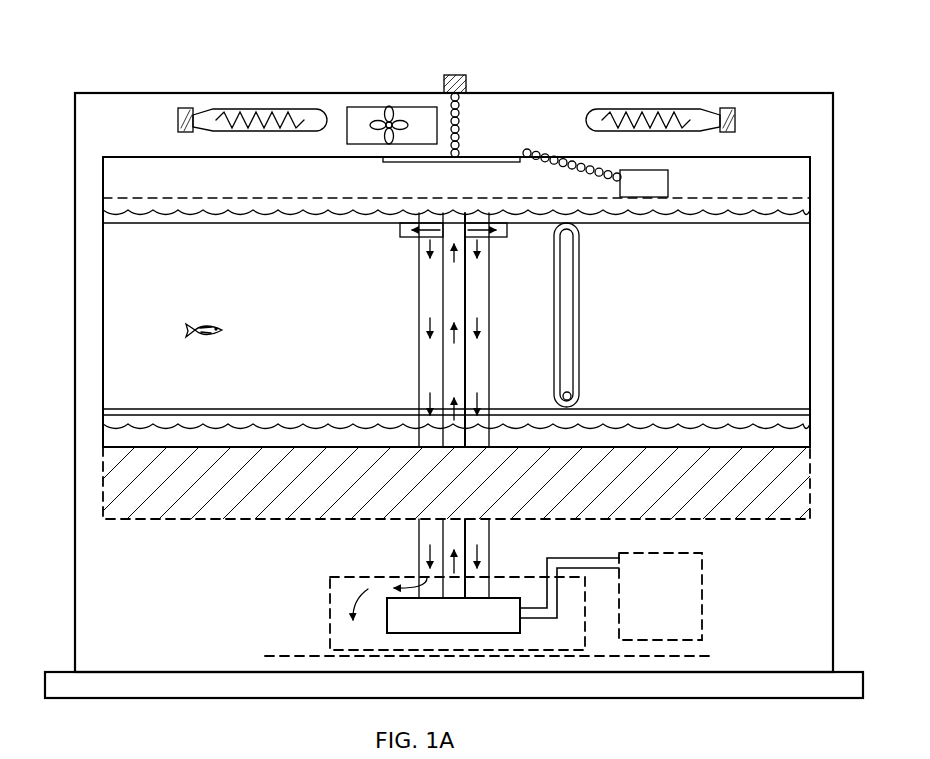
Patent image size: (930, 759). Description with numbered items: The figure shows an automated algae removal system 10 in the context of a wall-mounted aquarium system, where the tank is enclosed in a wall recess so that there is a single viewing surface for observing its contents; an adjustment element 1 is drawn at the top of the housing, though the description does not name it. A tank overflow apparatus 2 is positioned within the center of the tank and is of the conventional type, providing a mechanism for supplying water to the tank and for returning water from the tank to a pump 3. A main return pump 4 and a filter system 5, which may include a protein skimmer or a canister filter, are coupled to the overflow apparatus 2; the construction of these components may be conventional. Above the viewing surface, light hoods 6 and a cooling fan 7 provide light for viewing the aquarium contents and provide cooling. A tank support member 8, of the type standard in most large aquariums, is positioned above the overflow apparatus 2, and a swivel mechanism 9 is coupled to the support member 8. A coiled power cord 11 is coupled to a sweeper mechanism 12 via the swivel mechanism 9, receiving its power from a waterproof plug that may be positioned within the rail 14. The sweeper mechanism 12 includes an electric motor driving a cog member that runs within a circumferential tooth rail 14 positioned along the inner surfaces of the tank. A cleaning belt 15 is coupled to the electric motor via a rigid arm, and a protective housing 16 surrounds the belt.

The automated algae removal system 10 is at (40, 222).
The tank overflow apparatus 2 is at (345, 302).
The circumferential tooth rail 14 is at (237, 178).
The light hoods 6 is at (178, 122).
The cooling fan 7 is at (388, 115).
The adjusting knob with spring 1 is at (462, 112).
The tank support member 8 is at (443, 178).
The coiled power cord 11 is at (583, 178).
The sweeper mechanism 12 is at (596, 315).
The cleaning belt 15 is at (573, 298).
The protective housing 16 is at (572, 396).
The swivel mechanism 9 is at (568, 482).
The main return pump 4 is at (486, 595).
The filter system 5 is at (660, 596).
The pump 3 is at (266, 652).